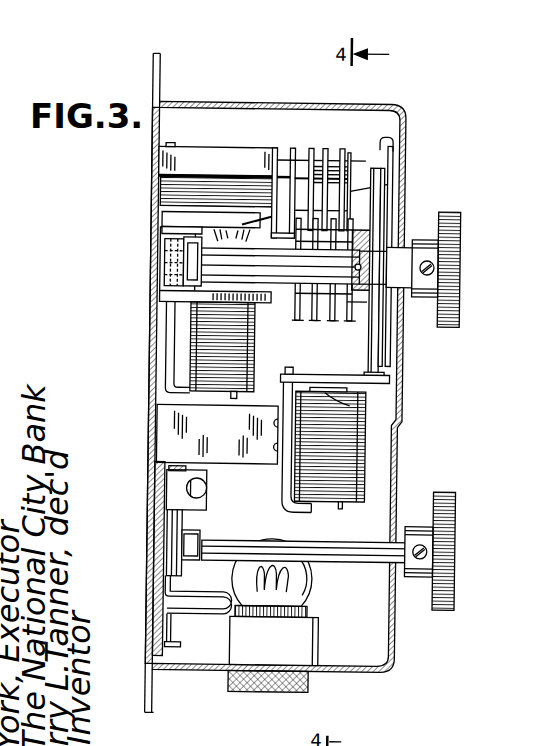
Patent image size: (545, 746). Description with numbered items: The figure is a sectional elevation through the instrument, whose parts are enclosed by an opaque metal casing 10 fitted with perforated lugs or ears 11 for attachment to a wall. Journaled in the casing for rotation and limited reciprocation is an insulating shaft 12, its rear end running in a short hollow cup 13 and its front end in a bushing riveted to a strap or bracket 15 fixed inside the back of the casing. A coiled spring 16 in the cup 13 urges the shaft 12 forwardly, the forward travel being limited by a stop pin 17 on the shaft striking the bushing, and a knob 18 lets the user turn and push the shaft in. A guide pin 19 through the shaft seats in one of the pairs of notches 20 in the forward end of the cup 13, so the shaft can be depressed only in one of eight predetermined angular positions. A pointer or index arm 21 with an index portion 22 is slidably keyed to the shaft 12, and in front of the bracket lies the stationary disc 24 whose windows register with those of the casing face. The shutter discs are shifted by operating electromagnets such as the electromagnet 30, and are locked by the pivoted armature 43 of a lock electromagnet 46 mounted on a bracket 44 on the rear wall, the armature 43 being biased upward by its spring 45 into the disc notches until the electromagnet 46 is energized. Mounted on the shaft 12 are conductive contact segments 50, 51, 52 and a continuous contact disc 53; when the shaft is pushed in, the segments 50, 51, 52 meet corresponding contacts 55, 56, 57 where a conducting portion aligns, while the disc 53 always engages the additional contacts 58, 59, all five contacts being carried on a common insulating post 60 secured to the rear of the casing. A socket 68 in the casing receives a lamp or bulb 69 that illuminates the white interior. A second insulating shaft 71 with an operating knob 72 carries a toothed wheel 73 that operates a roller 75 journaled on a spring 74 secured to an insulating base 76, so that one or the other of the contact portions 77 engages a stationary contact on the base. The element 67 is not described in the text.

The casing 10 is at (282, 104).
The perforated lugs or ears 11 is at (157, 76).
The shaft 12 is at (243, 267).
The cup 13 is at (160, 293).
The strap or bracket 15 is at (361, 307).
The coiled spring 16 is at (165, 268).
The stop pin 17 is at (359, 264).
The knob 18 is at (448, 227).
The guide pin 19 is at (194, 233).
The notches 20 is at (186, 269).
The pointer or index arm 21 is at (388, 188).
The index portion 22 is at (389, 141).
The stationary disc 24 is at (378, 347).
The electromagnet 30 is at (211, 333).
The pivoted armature 43 is at (380, 381).
The bracket 44 is at (178, 447).
The spring 45 is at (350, 405).
The lock electromagnet 46 is at (350, 468).
The contact disc or segment 50 is at (347, 319).
The contact disc or segment 51 is at (330, 315).
The contact disc or segment 52 is at (314, 320).
The contact disc 53 is at (296, 320).
The contact 55 is at (339, 148).
The contact 56 is at (322, 148).
The contact 57 is at (309, 148).
The contact 58 is at (270, 203).
The contact 59 is at (285, 192).
The insulating post 60 is at (199, 158).
The insulating strip 67 is at (390, 156).
The socket 68 is at (289, 690).
The lamp or bulb 69 is at (306, 586).
The shaft 71 is at (360, 561).
The operating knob 72 is at (450, 512).
The toothed wheel 73 is at (182, 578).
The spring 74 is at (168, 530).
The roller 75 is at (204, 499).
The insulating base 76 is at (172, 557).
The contact portions 77 is at (202, 487).